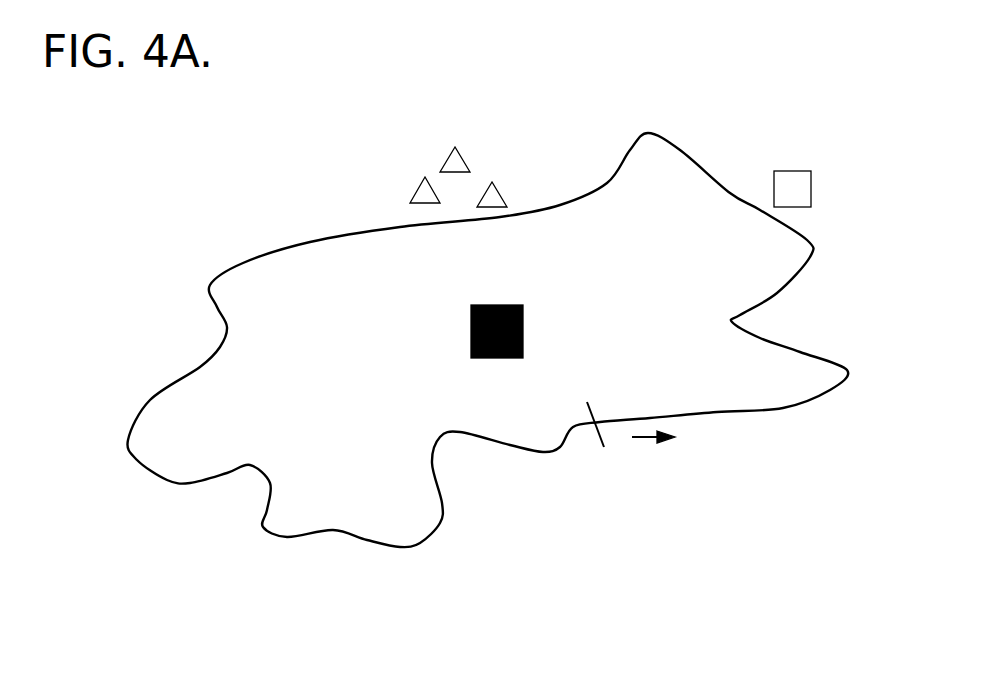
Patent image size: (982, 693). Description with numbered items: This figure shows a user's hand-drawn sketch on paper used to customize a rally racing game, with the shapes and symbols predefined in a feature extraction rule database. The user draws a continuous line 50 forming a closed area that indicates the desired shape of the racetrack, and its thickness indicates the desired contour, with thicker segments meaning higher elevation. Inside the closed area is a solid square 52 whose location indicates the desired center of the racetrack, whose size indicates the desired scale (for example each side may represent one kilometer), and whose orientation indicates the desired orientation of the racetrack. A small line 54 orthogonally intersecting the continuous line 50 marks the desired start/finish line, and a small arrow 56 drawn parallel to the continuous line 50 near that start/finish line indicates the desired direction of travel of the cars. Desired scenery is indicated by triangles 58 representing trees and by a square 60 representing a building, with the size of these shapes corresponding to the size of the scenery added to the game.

The continuous line 50 is at (317, 238).
The solid square 52 is at (470, 333).
The line 54 is at (602, 445).
The arrow 56 is at (637, 440).
The triangles 58 is at (489, 151).
The square 60 is at (792, 171).